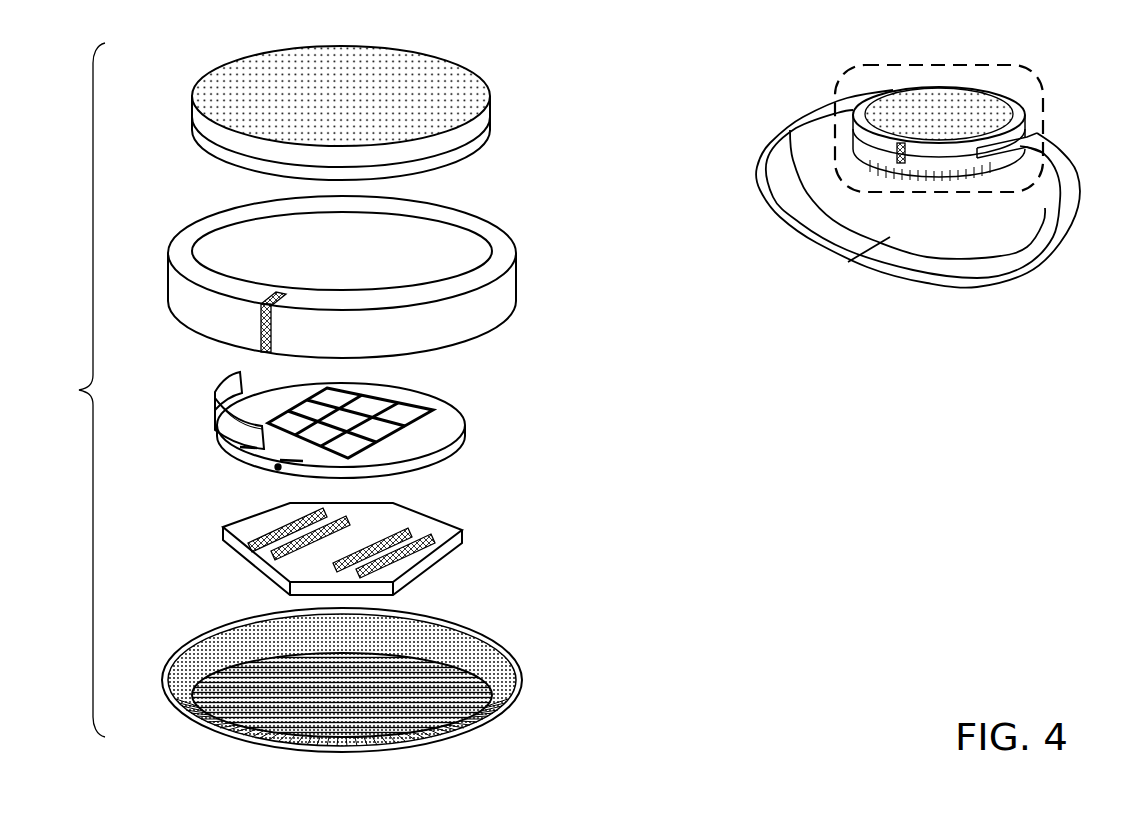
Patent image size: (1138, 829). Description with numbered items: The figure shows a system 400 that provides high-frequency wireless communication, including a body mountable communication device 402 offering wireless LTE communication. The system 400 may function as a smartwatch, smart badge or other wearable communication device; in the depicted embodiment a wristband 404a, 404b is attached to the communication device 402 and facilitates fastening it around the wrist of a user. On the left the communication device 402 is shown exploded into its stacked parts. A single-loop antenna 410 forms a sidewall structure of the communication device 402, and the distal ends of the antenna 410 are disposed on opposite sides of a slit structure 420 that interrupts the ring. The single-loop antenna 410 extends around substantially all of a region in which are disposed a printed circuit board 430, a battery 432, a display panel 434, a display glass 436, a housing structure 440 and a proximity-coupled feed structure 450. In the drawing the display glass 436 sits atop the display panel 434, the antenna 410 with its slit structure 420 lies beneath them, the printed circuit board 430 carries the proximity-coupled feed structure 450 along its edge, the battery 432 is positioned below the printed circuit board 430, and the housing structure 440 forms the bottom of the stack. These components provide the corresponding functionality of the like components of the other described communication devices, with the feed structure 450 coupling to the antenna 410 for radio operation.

The system 400 is at (712, 90).
The body mountable communication device 402 is at (1008, 48).
The wristband 404a is at (825, 257).
The wristband 404b is at (960, 292).
The single-loop antenna 410 is at (342, 277).
The slit structure 420 is at (280, 302).
The printed circuit board 430 is at (337, 419).
The battery 432 is at (468, 548).
The display panel 434 is at (374, 113).
The display glass 436 is at (350, 96).
The housing structure 440 is at (323, 700).
The proximity-coupled feed structure 450 is at (213, 412).